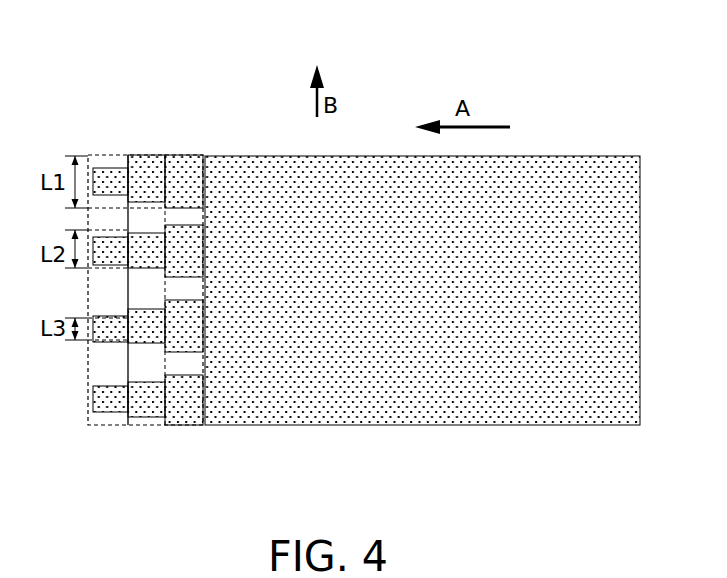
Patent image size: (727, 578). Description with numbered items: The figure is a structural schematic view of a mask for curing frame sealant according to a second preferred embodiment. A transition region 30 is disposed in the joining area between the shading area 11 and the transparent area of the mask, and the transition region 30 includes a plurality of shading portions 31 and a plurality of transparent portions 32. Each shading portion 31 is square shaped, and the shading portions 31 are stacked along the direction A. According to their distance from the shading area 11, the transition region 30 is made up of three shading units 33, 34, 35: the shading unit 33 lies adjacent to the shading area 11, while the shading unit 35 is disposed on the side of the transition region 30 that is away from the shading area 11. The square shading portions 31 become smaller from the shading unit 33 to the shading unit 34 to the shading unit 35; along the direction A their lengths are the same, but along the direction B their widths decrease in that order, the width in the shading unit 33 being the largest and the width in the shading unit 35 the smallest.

The shading area 11 is at (545, 208).
The transition region 30 is at (160, 277).
The shading portion 31 is at (184, 172).
The transparent portion 32 is at (188, 212).
The shading unit 33 is at (173, 427).
The shading unit 34 is at (147, 427).
The shading unit 35 is at (115, 428).